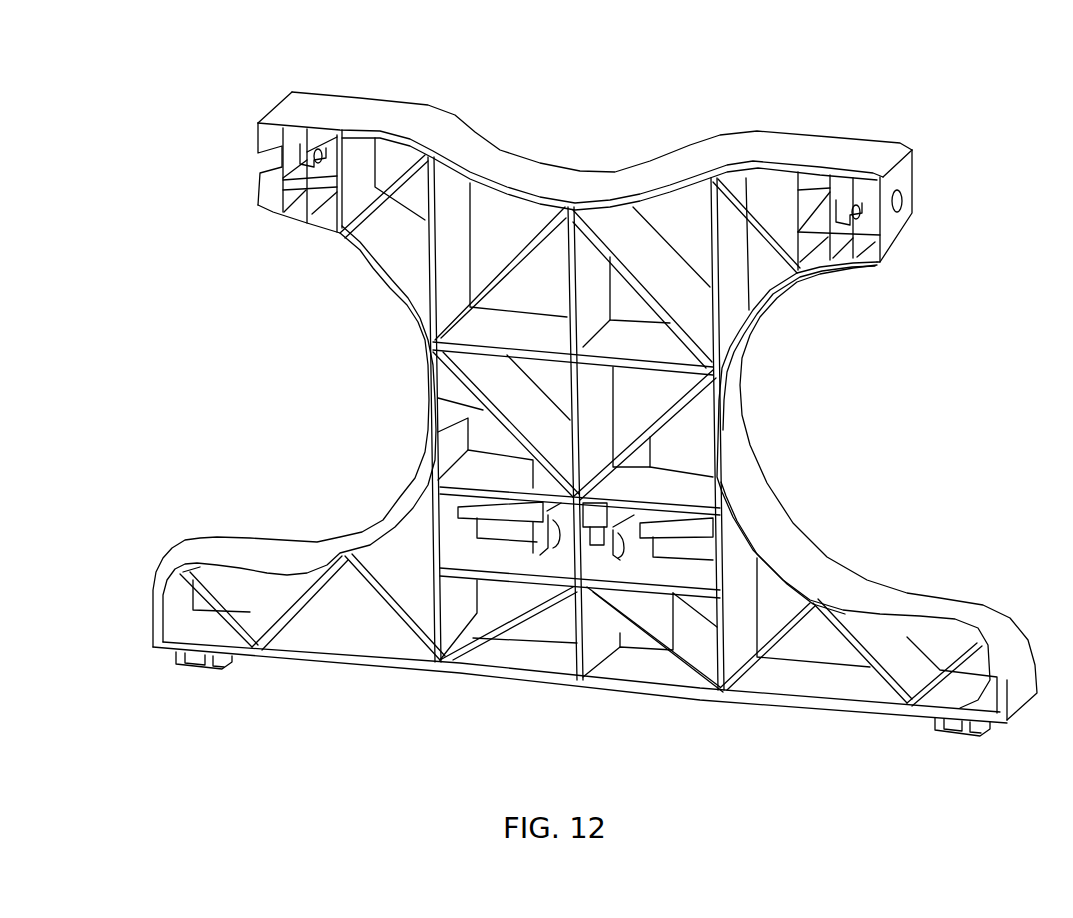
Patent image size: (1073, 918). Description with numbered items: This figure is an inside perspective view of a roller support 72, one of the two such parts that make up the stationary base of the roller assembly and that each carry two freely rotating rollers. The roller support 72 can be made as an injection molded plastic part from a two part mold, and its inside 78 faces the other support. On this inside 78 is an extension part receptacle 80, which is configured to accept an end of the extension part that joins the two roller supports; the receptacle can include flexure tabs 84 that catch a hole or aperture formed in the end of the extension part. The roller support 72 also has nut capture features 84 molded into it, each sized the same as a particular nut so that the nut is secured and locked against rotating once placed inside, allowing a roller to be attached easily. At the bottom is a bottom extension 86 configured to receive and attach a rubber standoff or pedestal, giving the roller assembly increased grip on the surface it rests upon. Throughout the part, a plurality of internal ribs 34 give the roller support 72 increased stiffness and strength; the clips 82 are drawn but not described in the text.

The roller support 72 is at (918, 309).
The internal ribs 34 is at (573, 234).
The nut capture feature 84 is at (581, 156).
The inside 78 is at (472, 668).
The extension part receptacle 80 is at (585, 636).
The retaining clip 82 is at (607, 630).
The bottom extension 86 is at (592, 714).